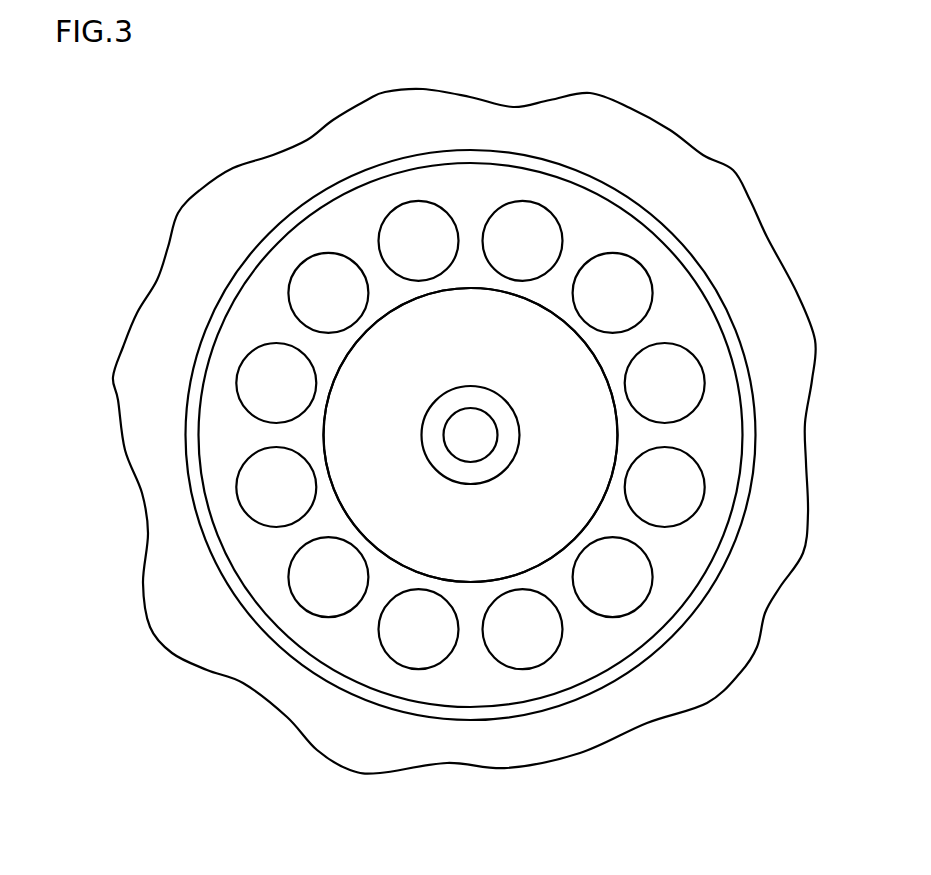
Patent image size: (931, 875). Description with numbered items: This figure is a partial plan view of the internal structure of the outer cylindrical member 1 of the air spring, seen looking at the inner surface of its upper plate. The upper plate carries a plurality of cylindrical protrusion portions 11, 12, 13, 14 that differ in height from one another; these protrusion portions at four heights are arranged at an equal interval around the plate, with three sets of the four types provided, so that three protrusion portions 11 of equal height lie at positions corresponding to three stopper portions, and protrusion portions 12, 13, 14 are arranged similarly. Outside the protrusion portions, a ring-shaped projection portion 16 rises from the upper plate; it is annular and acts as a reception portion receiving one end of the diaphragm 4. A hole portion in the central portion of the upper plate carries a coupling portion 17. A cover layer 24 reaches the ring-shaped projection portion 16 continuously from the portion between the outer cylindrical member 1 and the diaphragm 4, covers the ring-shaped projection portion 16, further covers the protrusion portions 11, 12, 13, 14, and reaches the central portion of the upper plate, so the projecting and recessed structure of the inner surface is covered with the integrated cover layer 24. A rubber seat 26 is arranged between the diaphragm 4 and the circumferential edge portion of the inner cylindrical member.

The outer cylindrical member 1 is at (530, 525).
The diaphragm 4 is at (738, 218).
The protrusion portion 11 is at (630, 277).
The protrusion portion 12 is at (524, 226).
The protrusion portion 13 is at (325, 283).
The protrusion portion 14 is at (422, 226).
The ring-shaped projection portion 16 is at (715, 296).
The coupling portion 17 is at (465, 445).
The cover layer 24 is at (675, 553).
The rubber seat 26 is at (673, 327).